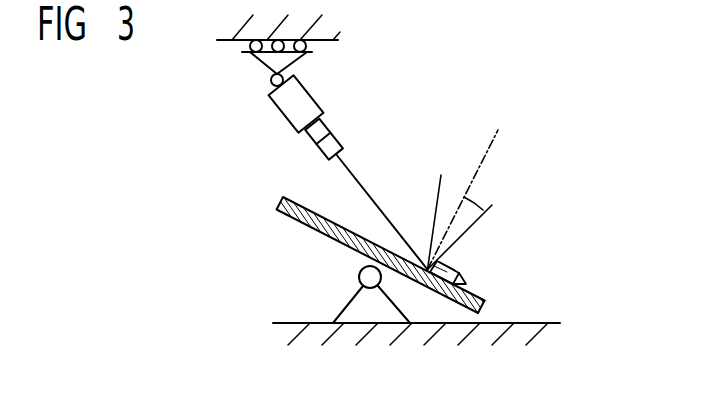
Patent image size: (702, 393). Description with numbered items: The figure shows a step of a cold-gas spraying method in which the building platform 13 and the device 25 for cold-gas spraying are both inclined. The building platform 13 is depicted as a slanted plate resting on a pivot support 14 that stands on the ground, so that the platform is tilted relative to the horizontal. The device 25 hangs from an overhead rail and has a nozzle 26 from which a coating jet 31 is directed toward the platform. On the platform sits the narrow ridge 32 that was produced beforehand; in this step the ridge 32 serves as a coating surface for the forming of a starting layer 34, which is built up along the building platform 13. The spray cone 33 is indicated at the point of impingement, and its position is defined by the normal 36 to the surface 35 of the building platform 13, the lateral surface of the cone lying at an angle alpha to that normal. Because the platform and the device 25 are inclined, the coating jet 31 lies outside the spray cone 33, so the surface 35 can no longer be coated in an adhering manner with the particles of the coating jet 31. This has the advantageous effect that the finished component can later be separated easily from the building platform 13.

The building platform 13 is at (294, 216).
The pivot support 14 is at (368, 305).
The device for cold-gas spraying 25 is at (260, 122).
The nozzle 26 is at (329, 155).
The coating jet 31 is at (361, 183).
The ridge 32 is at (463, 283).
The spray cone 33 is at (438, 198).
The starting layer 34 is at (450, 262).
The surface 35 is at (482, 293).
The normal 36 is at (478, 170).